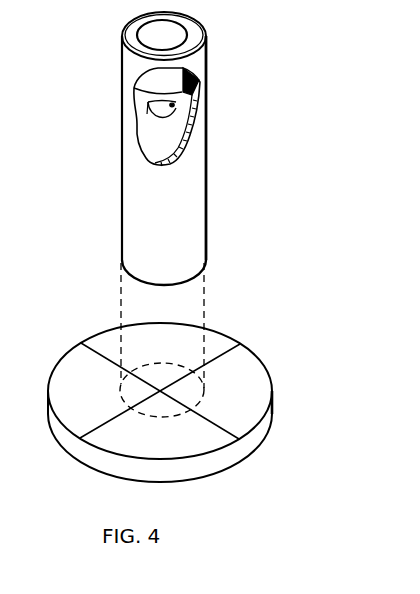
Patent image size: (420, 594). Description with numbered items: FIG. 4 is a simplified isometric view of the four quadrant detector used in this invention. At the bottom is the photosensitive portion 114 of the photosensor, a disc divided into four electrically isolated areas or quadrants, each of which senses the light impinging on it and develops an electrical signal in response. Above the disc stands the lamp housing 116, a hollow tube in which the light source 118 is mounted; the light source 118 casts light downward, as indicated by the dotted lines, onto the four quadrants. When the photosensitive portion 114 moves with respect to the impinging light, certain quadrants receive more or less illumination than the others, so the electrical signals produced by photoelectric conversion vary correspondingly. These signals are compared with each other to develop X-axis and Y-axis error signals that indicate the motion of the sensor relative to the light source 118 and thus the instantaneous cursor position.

The photosensitive portion 114 is at (268, 375).
The lamp housing 116 is at (208, 132).
The light source 118 is at (174, 117).